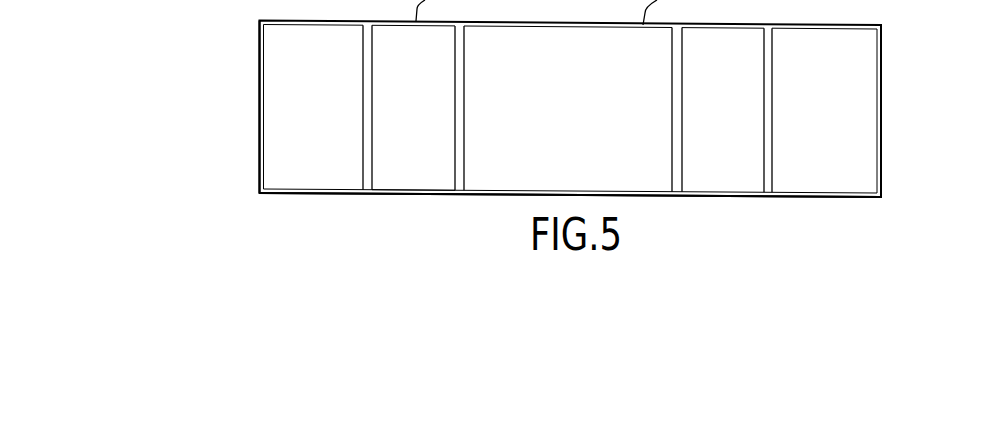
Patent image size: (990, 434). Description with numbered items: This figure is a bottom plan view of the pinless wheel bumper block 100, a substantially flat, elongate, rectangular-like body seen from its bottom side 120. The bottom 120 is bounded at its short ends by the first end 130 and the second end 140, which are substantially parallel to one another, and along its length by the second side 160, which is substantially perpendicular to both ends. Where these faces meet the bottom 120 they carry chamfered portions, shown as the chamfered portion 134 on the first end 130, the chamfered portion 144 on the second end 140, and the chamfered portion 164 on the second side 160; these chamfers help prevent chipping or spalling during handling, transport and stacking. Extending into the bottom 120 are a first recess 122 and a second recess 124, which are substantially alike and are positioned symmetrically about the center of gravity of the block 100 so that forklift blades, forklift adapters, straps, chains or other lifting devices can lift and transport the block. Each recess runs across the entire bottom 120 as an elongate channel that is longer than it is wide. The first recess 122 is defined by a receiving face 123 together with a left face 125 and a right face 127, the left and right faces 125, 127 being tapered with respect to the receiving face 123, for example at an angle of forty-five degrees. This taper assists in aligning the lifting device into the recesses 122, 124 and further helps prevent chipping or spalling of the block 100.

The block 100 is at (236, 185).
The bottom side 120 is at (510, 182).
The first recess 122 is at (412, 167).
The receiving face 123 is at (395, 178).
The second recess 124 is at (723, 177).
The left face 125 is at (367, 192).
The right face 127 is at (460, 183).
The first end 130 is at (260, 140).
The chamfered portion 134 is at (260, 55).
The second end 140 is at (880, 125).
The chamfered portion 144 is at (880, 80).
The second side 160 is at (808, 195).
The chamfered portion 164 is at (640, 195).